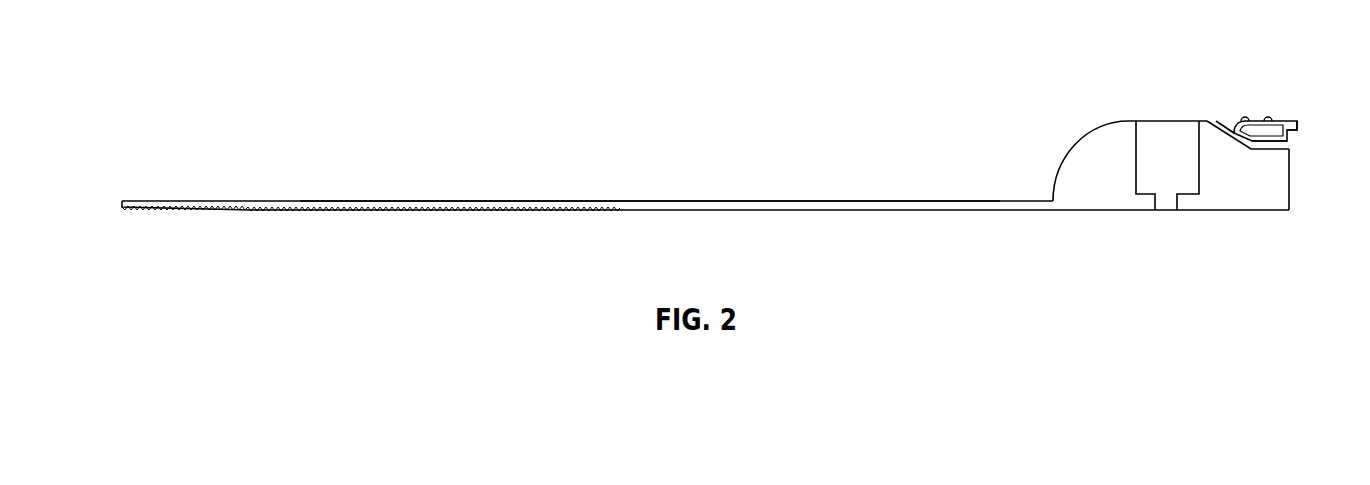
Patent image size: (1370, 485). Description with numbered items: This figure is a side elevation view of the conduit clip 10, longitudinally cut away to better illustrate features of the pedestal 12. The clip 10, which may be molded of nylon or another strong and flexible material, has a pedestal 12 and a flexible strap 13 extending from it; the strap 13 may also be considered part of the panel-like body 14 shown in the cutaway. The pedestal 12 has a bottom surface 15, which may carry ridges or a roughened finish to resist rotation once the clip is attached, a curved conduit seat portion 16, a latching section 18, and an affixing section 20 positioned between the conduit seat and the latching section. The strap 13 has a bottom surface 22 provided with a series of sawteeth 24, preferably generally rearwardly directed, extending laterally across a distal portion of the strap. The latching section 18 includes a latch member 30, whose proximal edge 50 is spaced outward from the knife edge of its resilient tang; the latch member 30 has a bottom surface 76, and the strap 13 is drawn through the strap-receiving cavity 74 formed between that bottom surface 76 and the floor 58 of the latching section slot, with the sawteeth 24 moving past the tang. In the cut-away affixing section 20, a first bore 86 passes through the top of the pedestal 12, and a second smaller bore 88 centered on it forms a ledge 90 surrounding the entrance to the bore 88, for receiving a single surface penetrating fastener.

The conduit clip 10 is at (648, 102).
The pedestal 12 is at (1298, 222).
The flexible strap 13 is at (645, 205).
The panel 14 is at (1028, 222).
The bottom surface 15 is at (1103, 213).
The curved conduit seat portion 16 is at (1043, 118).
The latching section 18 is at (1266, 98).
The affixing section 20 is at (1146, 91).
The bottom surface 22 is at (375, 212).
The sawteeth 24 is at (517, 222).
The latch member 30 is at (1302, 137).
The proximal edge 50 is at (1273, 140).
The floor 58 is at (1233, 143).
The strap-receiving cavity 74 is at (1215, 116).
The bottom surface 76 is at (1240, 142).
The first bore 86 is at (1172, 140).
The second bore 88 is at (1163, 210).
The ledge 90 is at (1143, 195).